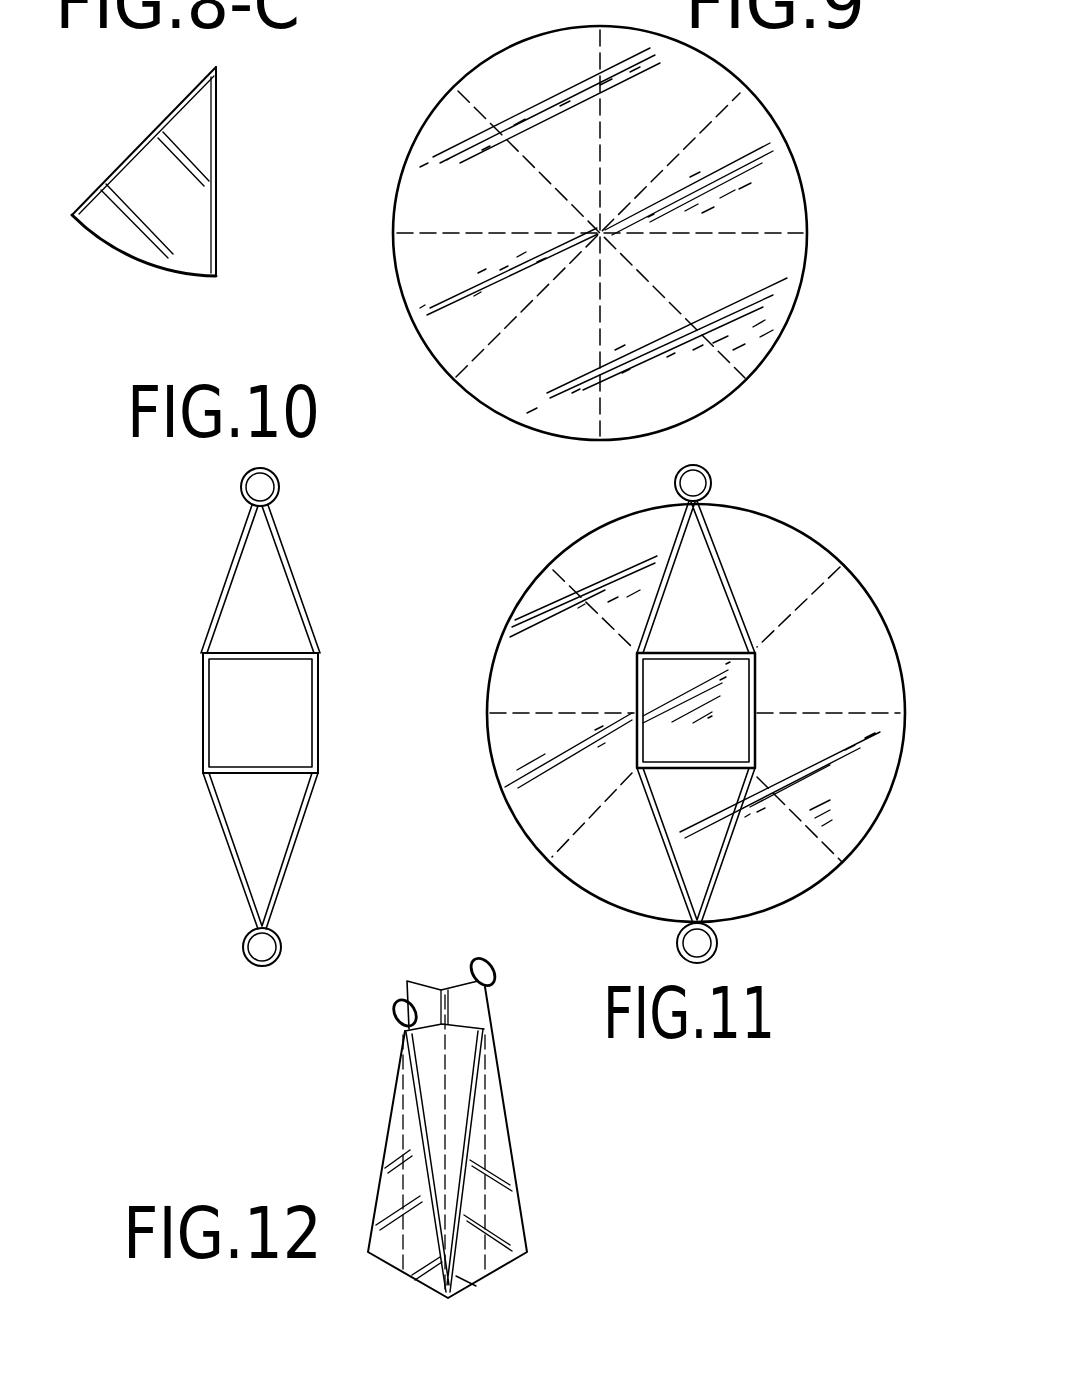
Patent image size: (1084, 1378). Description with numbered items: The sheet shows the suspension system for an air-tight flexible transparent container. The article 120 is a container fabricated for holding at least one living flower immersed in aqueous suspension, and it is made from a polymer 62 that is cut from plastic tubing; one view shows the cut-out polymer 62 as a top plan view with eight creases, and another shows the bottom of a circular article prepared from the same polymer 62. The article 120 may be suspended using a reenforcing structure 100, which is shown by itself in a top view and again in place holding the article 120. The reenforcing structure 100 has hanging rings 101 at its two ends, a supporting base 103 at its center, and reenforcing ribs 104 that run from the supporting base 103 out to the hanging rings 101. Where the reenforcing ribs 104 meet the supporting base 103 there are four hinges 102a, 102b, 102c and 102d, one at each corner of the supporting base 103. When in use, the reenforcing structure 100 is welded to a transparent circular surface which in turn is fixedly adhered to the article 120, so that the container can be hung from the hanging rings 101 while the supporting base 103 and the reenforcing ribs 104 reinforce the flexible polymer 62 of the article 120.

In FIG. 8C, the polymer 62 is at (199, 225).
In FIG. 9, the polymer 62 is at (445, 118).
In FIG. 11, the polymer 62 is at (870, 645).
In FIG. 12, the polymer 62 is at (505, 1205).
In FIG. 10, the reenforcing structure 100 is at (242, 715).
In FIG. 11, the reenforcing structure 100 is at (688, 709).
In FIG. 10, the hanging rings 101 is at (280, 490).
In FIG. 11, the hanging rings 101 is at (711, 485).
In FIG. 12, the hanging rings 101 is at (392, 1010).
In FIG. 10, the hinge 102a is at (205, 777).
In FIG. 10, the hinge 102b is at (320, 787).
In FIG. 10, the hinge 102c is at (320, 648).
In FIG. 10, the hinge 102d is at (200, 648).
In FIG. 10, the supporting base 103 is at (205, 706).
In FIG. 11, the supporting base 103 is at (754, 692).
In FIG. 10, the reenforcing ribs 104 is at (236, 556).
In FIG. 11, the reenforcing ribs 104 is at (725, 585).
In FIG. 12, the article 120 is at (463, 1100).